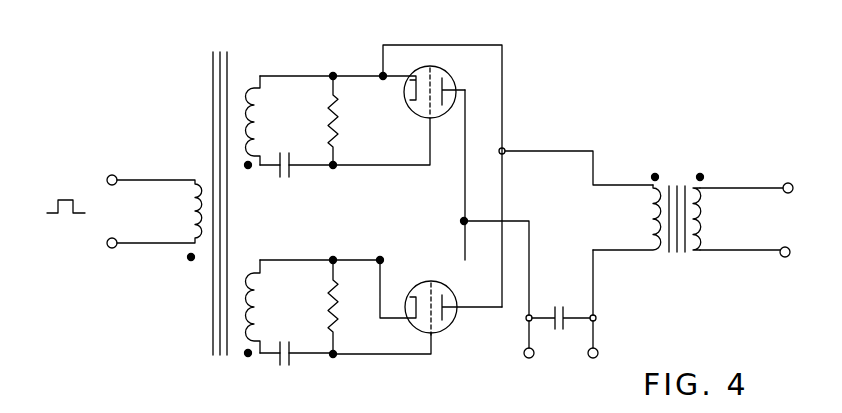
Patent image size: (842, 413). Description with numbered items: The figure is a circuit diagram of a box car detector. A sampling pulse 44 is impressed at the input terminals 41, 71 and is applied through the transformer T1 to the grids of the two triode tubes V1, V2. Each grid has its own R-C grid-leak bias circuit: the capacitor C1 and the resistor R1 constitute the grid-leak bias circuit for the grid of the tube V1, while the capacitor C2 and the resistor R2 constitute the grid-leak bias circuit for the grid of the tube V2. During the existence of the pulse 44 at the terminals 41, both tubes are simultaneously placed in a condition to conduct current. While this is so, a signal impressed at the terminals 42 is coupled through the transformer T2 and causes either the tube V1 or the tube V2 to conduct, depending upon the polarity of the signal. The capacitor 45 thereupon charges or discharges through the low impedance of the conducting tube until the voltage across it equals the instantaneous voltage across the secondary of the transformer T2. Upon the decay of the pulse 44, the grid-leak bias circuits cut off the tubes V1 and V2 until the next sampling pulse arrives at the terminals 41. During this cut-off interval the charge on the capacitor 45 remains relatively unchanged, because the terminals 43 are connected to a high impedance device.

The input terminals 41 is at (109, 176).
The input terminal 71 is at (108, 247).
The sampling pulse 44 is at (62, 199).
The transformer T1 is at (212, 68).
The transformer T2 is at (680, 185).
The resistor R1 is at (340, 122).
The resistor R2 is at (340, 318).
The capacitor C1 is at (290, 170).
The capacitor C2 is at (290, 360).
The triode tube V1 is at (440, 67).
The triode tube V2 is at (447, 328).
The capacitor 45 is at (566, 310).
The output terminals 43 is at (527, 359).
The signal terminals 42 is at (791, 184).